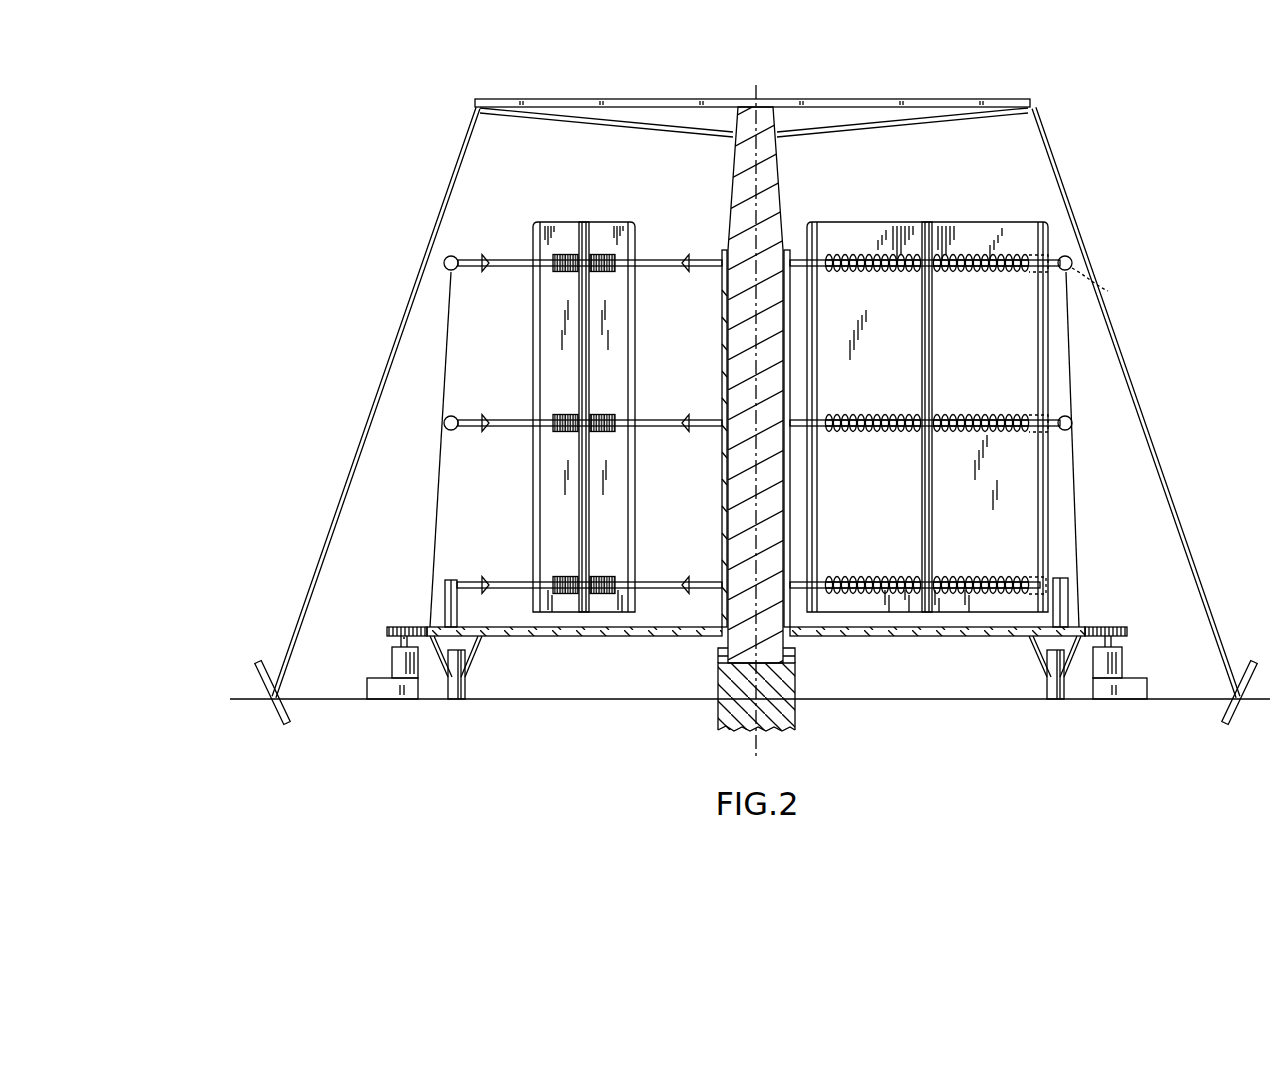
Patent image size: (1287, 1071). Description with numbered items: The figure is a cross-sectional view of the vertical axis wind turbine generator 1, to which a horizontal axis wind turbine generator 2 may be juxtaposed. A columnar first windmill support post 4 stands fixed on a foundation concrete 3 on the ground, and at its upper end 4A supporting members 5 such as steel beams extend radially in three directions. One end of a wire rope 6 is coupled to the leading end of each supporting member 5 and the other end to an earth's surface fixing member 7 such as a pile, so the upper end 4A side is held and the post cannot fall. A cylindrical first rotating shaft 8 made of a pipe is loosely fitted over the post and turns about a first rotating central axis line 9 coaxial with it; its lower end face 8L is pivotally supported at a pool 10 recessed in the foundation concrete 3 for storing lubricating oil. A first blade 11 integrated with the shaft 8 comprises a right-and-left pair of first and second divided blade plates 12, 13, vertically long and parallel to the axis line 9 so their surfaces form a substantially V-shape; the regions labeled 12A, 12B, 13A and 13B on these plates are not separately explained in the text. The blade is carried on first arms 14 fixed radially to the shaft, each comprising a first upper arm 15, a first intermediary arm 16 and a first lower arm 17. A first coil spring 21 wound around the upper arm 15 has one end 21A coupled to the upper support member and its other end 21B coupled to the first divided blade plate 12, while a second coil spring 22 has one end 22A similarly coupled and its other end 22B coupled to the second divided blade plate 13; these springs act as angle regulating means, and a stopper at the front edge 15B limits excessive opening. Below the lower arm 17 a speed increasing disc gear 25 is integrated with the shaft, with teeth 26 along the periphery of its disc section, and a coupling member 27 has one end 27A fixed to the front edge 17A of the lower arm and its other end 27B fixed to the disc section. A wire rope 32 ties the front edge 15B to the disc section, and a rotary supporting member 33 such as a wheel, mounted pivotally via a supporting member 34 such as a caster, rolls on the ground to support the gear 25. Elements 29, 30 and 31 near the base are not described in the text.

The vertical axis wind turbine generator 1 is at (430, 152).
The horizontal axis wind turbine generator 2 is at (850, 702).
The foundation concrete 3 is at (772, 695).
The first windmill support post 4 is at (780, 165).
The upper end 4A is at (767, 106).
The supporting member 5 is at (668, 99).
The wire rope 6 is at (402, 325).
The earth's surface fixing member 7 is at (262, 660).
The first rotating shaft 8 is at (788, 250).
The lower end face 8L is at (793, 655).
The first rotating central axis line 9 is at (752, 748).
The pool 10 is at (720, 655).
The first blade 11 is at (971, 376).
The first divided blade plate 12 is at (843, 238).
The upper portion of first panel 12A is at (880, 230).
The lower portion of first panel 12B is at (823, 490).
The second divided blade plate 13 is at (1022, 238).
The upper portion of second panel 13A is at (935, 235).
The lower portion of second panel 13B is at (1018, 515).
The first arm 14 is at (978, 282).
The first upper arm 15 is at (1065, 343).
The front edge 15B is at (1113, 288).
The first intermediary arm 16 is at (992, 427).
The first lower arm 17 is at (1010, 580).
The front edge 17A is at (1023, 622).
The first coil spring 21 is at (875, 276).
The one end 21A is at (920, 276).
The other end 21B is at (828, 276).
The second coil spring 22 is at (970, 276).
The one end 22A is at (935, 276).
The other end 22B is at (1010, 276).
The speed increasing disc gear 25 is at (890, 632).
The teeth 26 is at (1064, 665).
The coupling member 27 is at (1067, 597).
The one end 27A is at (1057, 585).
The other end 27B is at (1060, 615).
The right jack 29 is at (1112, 665).
The left jack 30 is at (400, 666).
The platform end piece 31 is at (1127, 630).
The wire rope 32 is at (436, 514).
The rotary supporting member 33 is at (1057, 670).
The supporting member 34 is at (1033, 652).